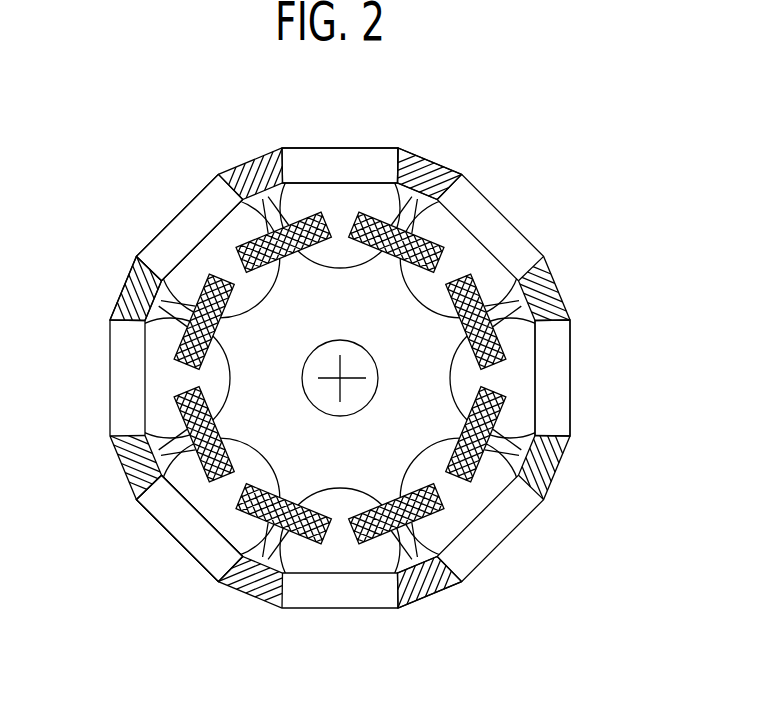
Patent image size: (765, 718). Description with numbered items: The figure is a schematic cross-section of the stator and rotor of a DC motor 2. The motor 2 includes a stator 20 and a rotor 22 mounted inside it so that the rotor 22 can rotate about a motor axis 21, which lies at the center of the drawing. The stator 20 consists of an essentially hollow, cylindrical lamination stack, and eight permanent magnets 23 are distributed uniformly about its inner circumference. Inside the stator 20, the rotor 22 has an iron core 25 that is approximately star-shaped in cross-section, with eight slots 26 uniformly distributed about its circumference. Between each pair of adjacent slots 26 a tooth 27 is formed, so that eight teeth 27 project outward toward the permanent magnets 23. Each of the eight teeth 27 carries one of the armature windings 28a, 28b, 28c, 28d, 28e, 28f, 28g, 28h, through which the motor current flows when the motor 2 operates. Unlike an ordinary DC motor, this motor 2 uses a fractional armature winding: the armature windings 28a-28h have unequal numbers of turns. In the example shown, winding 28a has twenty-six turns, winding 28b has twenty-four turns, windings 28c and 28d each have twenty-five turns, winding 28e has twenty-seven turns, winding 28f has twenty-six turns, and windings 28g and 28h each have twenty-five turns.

The motor 2 is at (568, 157).
The stator 20 is at (555, 286).
The motor axis 21 is at (303, 370).
The rotor 22 is at (509, 508).
The permanent magnets 23 is at (313, 150).
The iron core 25 is at (405, 440).
The slots 26 is at (213, 255).
The tooth 27 is at (413, 200).
The armature winding 28a is at (170, 300).
The armature winding 28b is at (273, 225).
The armature winding 28c is at (375, 217).
The armature winding 28d is at (498, 278).
The armature winding 28e is at (550, 463).
The armature winding 28f is at (398, 545).
The armature winding 28g is at (273, 545).
The armature winding 28h is at (126, 466).